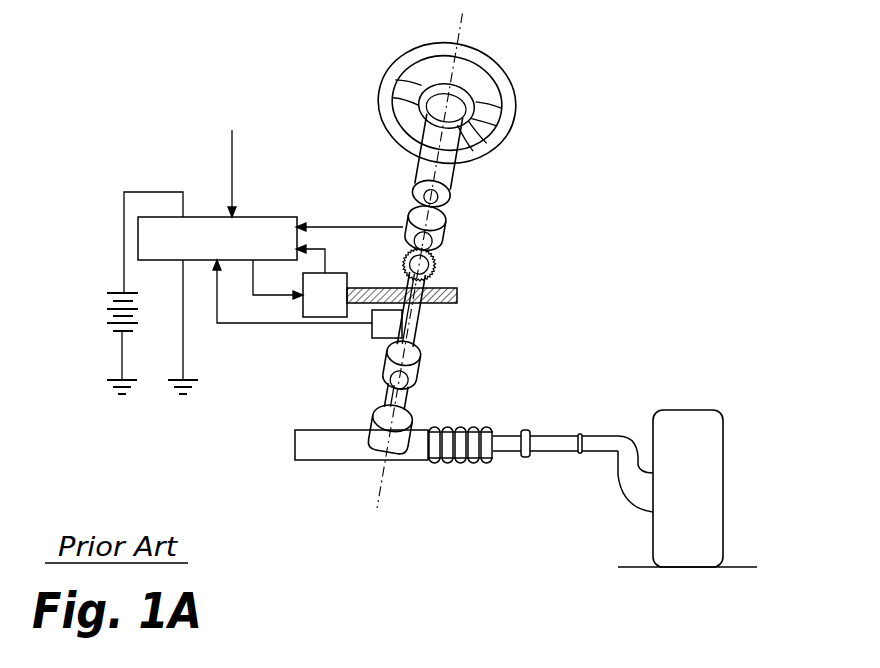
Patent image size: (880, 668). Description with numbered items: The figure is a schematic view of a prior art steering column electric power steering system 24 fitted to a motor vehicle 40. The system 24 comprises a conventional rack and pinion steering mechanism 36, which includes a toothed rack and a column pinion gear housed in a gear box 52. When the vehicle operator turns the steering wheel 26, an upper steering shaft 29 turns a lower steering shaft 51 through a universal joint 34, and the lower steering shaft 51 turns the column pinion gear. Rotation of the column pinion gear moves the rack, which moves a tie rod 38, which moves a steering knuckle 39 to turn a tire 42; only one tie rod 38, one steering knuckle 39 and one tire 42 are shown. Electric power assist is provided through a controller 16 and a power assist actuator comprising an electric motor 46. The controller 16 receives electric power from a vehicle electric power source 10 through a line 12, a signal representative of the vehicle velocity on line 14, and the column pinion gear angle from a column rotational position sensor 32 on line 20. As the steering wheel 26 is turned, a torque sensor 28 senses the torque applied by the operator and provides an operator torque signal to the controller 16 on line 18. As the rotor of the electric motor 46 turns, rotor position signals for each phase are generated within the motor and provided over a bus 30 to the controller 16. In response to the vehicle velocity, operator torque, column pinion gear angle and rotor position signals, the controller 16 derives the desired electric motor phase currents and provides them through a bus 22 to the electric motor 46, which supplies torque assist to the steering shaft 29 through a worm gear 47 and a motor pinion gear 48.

The vehicle electric power source 10 is at (110, 303).
The line 12 is at (137, 192).
The line 14 is at (232, 155).
The controller 16 is at (218, 217).
The line 18 is at (322, 226).
The line 20 is at (257, 323).
The bus 22 is at (272, 294).
The steering column electric power steering system 24 is at (560, 283).
The steering wheel 26 is at (495, 62).
The torque sensor 28 is at (413, 220).
The upper steering shaft 29 is at (433, 200).
The bus 30 is at (328, 260).
The column rotational position sensor 32 is at (373, 338).
The universal joint 34 is at (416, 360).
The rack and pinion steering mechanism 36 is at (452, 469).
The tie rod 38 is at (529, 455).
The steering knuckle 39 is at (635, 493).
The motor vehicle 40 is at (584, 385).
The tire 42 is at (687, 410).
The electric motor 46 is at (337, 318).
The worm gear 47 is at (457, 295).
The motor pinion gear 48 is at (436, 258).
The lower steering shaft 51 is at (410, 387).
The gear box 52 is at (373, 420).